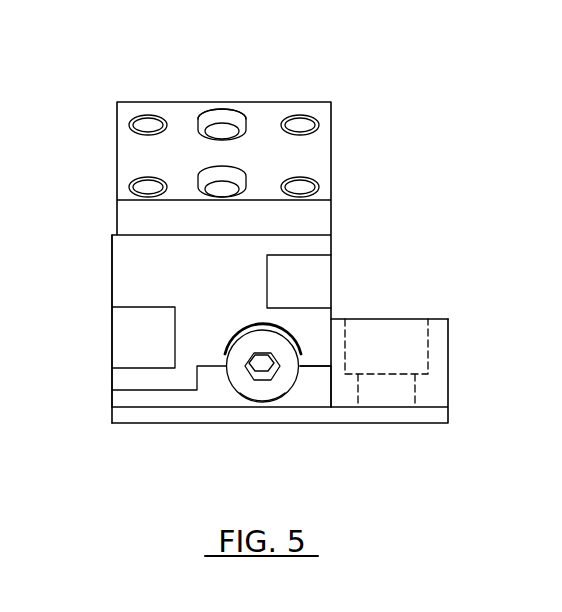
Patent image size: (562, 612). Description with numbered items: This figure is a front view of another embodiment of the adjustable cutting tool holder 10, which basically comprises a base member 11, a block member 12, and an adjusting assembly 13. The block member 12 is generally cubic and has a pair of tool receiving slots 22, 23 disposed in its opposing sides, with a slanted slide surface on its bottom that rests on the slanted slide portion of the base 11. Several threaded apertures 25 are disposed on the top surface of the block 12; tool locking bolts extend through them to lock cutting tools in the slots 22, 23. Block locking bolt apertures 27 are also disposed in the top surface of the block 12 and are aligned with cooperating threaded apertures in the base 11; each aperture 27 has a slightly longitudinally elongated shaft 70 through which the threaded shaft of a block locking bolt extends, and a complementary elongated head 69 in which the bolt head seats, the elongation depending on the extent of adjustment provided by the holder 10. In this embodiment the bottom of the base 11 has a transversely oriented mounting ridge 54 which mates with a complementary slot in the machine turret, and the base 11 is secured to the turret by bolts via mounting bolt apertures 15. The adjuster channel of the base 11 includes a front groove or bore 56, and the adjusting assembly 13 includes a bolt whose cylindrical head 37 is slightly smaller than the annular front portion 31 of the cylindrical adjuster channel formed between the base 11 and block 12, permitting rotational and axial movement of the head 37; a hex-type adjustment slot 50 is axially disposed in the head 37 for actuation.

The adjustable cutting tool holder 10 is at (96, 76).
The base member 11 is at (474, 298).
The block member 12 is at (95, 309).
The adjusting mechanism or assembly 13 is at (312, 394).
The mounting bolt apertures 15 is at (391, 326).
The tool receiving slot 22 is at (175, 343).
The tool receiving slot 23 is at (267, 293).
The threaded apertures 25 is at (130, 126).
The block locking bolt apertures 27 is at (252, 88).
The annular front portion of adjuster channel 31 is at (242, 318).
The cylindrical head 37 is at (236, 336).
The adjustment slot 50 is at (252, 372).
The mounting ridge 54 is at (140, 415).
The front groove or bore 56 is at (278, 396).
The elongated head 69 is at (210, 117).
The elongated shaft 70 is at (222, 133).